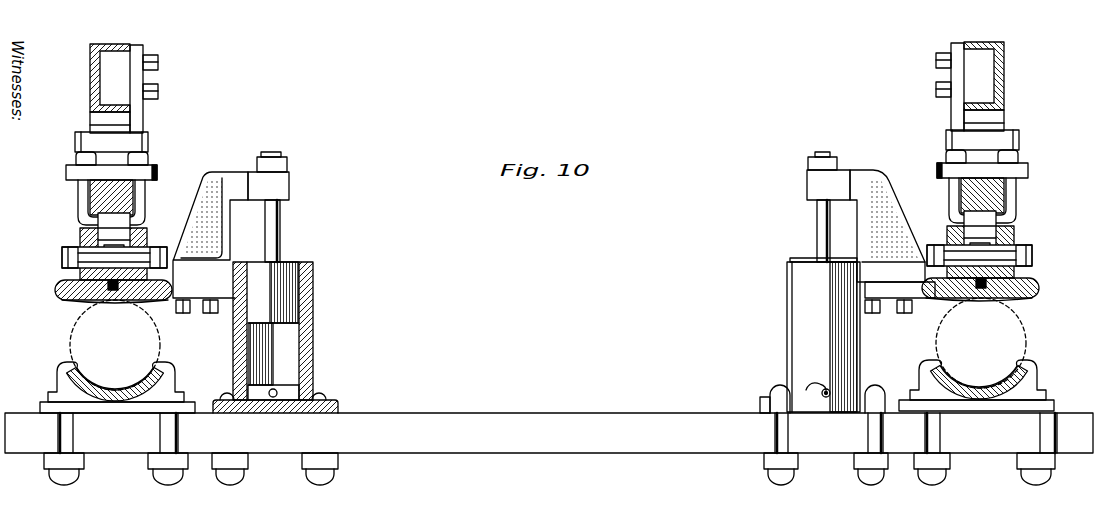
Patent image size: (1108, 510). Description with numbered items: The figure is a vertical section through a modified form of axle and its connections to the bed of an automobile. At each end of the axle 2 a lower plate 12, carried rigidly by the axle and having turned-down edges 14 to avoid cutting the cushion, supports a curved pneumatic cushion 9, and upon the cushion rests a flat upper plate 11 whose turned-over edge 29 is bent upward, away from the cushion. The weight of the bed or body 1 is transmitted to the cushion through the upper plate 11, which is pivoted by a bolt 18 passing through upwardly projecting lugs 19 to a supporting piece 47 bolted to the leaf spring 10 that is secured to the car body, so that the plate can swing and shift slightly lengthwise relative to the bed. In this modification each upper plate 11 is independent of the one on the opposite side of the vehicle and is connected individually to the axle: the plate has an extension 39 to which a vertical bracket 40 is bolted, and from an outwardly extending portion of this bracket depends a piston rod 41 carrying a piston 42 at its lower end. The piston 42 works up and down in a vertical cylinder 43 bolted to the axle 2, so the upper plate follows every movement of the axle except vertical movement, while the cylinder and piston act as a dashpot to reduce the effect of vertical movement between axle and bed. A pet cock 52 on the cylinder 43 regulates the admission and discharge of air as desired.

The bed or body of automobile 1 is at (95, 72).
The axle 2 is at (612, 412).
The pneumatic cushion 9 is at (72, 332).
The leaf spring 10 is at (78, 181).
The upper plate 11 is at (80, 300).
The lower plate 12 is at (78, 362).
The turned down edges 14 is at (57, 370).
The bolt 18 is at (62, 257).
The upwardly projecting lugs 19 is at (82, 232).
The turned over edge 29 is at (55, 288).
The extension 39 is at (198, 299).
The vertical bracket 40 is at (236, 178).
The piston rod 41 is at (283, 232).
The piston 42 is at (290, 266).
The vertical cylinder 43 is at (315, 320).
The bracket cup 47 is at (82, 210).
The pet cock 52 is at (828, 400).